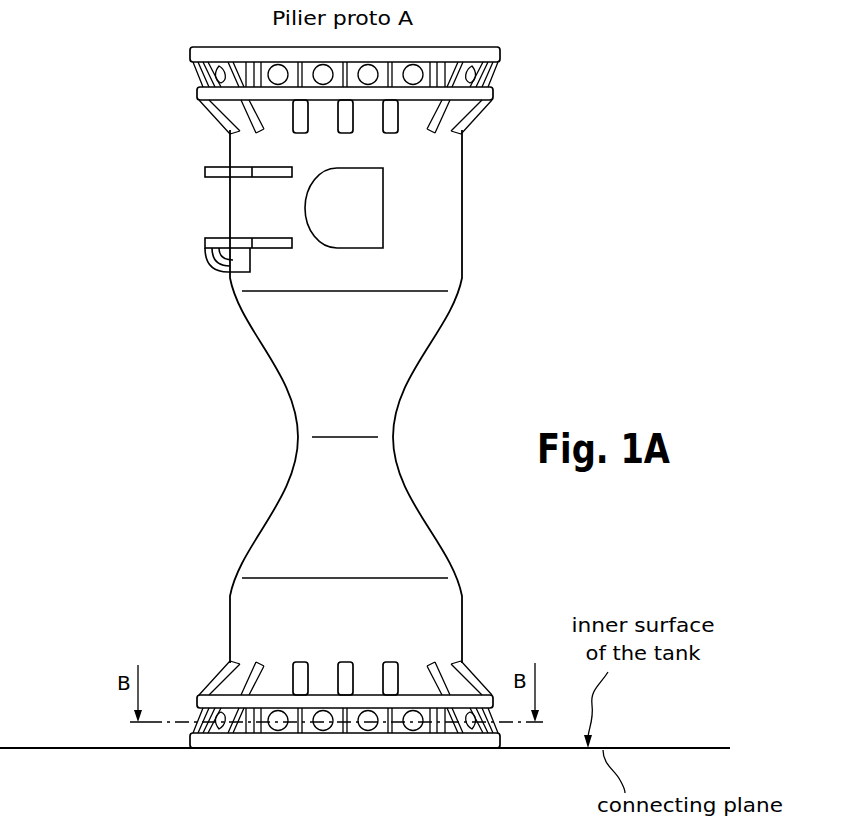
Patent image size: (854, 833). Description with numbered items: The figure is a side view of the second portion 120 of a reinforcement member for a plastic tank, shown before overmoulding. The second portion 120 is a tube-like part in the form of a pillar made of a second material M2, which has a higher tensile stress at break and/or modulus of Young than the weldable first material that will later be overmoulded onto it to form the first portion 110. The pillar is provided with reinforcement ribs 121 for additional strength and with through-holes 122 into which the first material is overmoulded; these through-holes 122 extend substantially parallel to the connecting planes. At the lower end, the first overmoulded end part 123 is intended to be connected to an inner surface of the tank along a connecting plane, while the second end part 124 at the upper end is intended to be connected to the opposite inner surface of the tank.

The first portion 110 is at (258, 672).
The second portion 120 is at (293, 396).
The reinforcement ribs 121 is at (257, 735).
The through-holes 122 is at (278, 728).
The first overmoulded end part 123 is at (276, 690).
The second end part 124 is at (166, 84).
The second material M2 is at (392, 537).